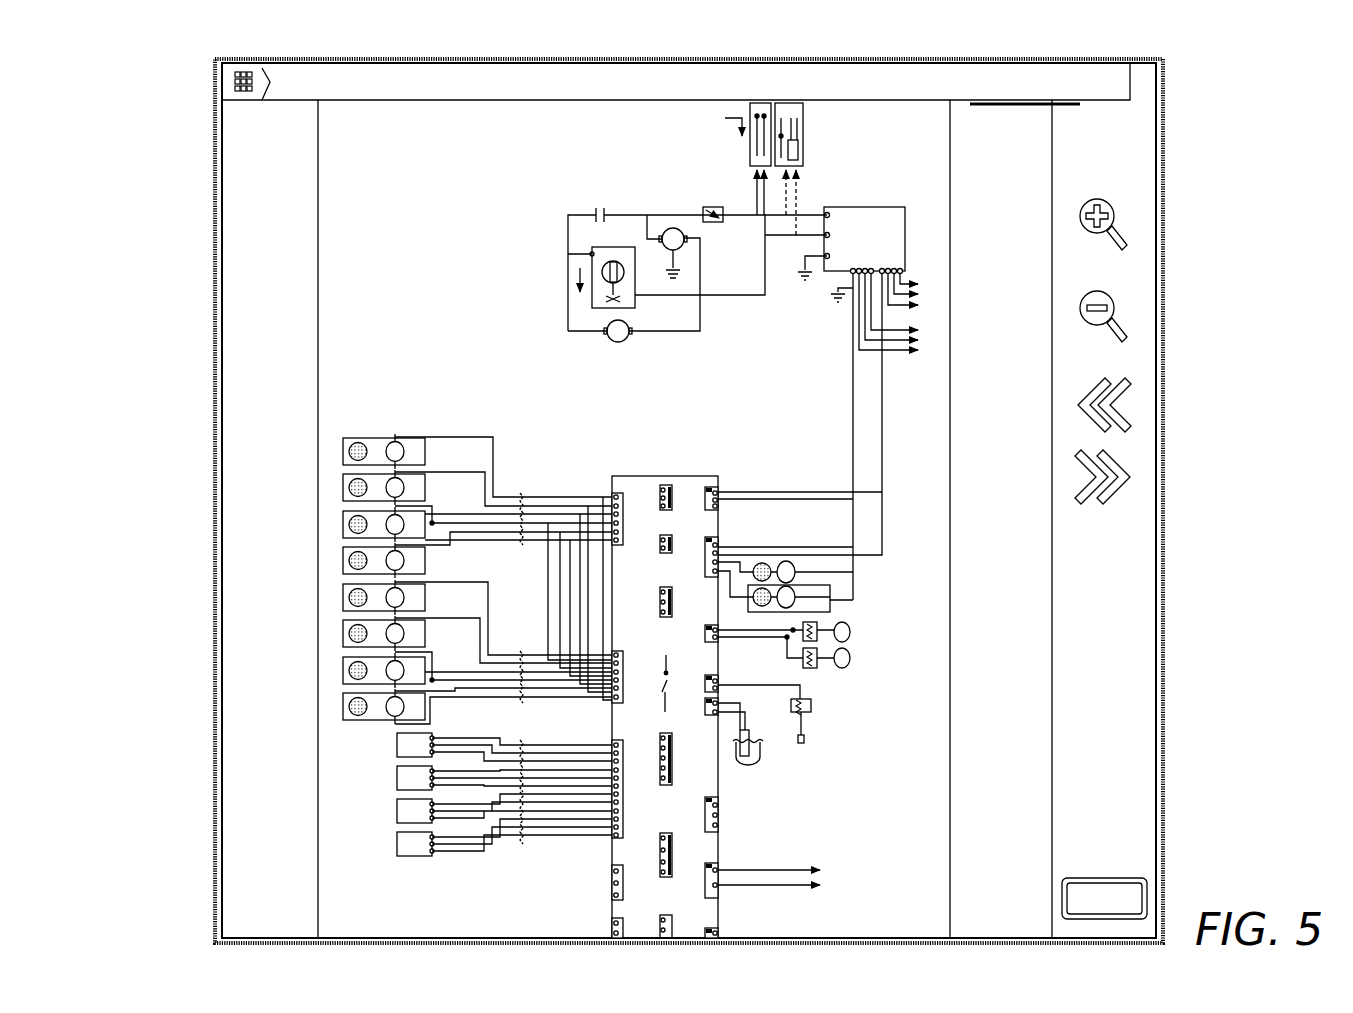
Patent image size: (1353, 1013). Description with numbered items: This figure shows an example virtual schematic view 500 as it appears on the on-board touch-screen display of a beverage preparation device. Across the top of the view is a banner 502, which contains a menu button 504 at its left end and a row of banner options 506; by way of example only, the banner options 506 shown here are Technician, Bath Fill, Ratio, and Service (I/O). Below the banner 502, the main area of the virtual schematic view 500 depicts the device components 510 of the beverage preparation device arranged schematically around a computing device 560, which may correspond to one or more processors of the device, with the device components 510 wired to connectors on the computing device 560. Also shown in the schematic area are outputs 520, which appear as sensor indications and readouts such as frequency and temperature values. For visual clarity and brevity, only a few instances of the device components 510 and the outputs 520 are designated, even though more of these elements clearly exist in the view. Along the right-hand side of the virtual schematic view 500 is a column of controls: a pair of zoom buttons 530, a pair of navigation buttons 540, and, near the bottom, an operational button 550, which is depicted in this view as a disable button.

The virtual schematic view 500 is at (138, 72).
The banner 502 is at (455, 70).
The menu button 504 is at (242, 68).
The banner options 506 is at (602, 70).
The device components 510 is at (905, 208).
The outputs 520 is at (348, 520).
The zoom buttons 530 is at (1120, 238).
The navigation buttons 540 is at (1115, 392).
The operational button 550 is at (1105, 877).
The computing device 560 is at (633, 478).